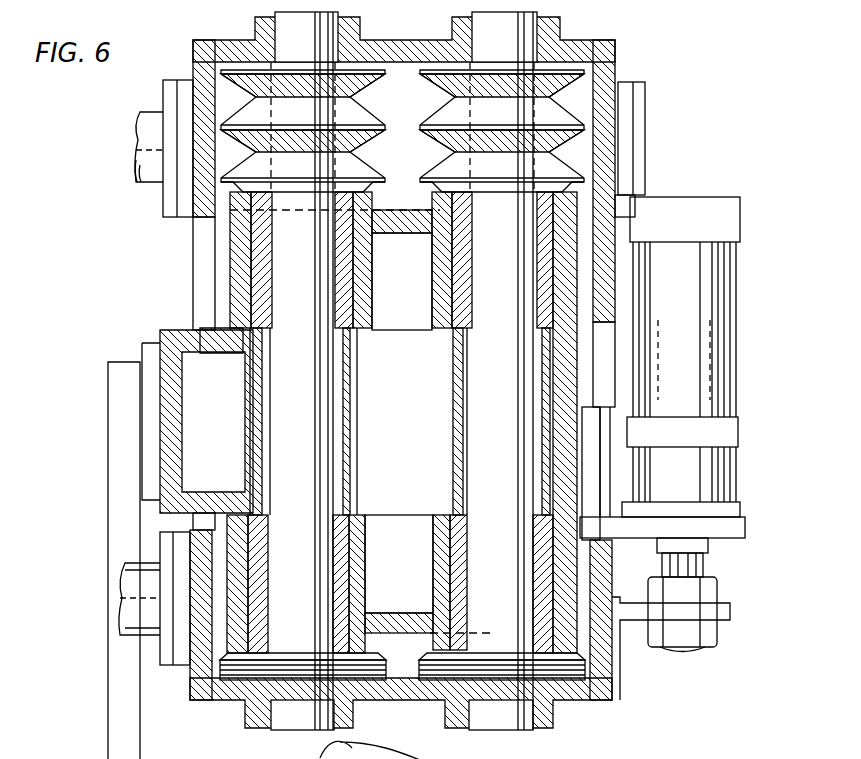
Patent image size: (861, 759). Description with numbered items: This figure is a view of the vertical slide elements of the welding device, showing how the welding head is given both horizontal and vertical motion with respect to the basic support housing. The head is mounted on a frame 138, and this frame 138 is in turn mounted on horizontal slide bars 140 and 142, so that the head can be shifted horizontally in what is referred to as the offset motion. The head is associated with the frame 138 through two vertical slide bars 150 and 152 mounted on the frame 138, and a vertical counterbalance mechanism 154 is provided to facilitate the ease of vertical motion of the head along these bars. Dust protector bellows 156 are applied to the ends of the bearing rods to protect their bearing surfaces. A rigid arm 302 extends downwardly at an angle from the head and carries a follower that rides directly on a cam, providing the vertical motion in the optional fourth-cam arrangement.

The frame 138 is at (205, 216).
The horizontal slide bar 140 is at (133, 597).
The horizontal slide bar 142 is at (140, 152).
The vertical slide bar 150 is at (325, 378).
The vertical slide bar 152 is at (483, 448).
The vertical counterbalance mechanism 154 is at (722, 340).
The dust protector bellows 156 is at (452, 113).
The rigid arm 302 is at (118, 695).